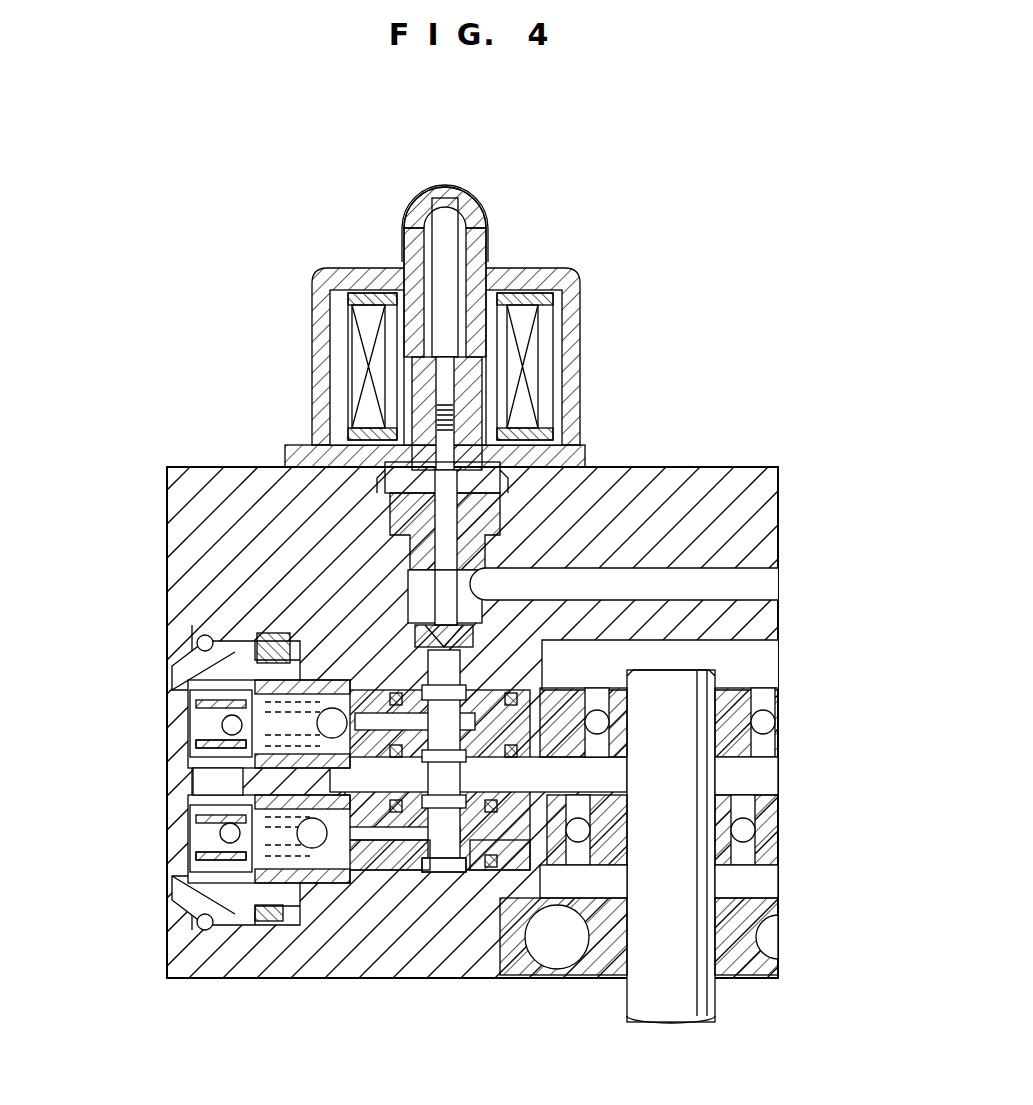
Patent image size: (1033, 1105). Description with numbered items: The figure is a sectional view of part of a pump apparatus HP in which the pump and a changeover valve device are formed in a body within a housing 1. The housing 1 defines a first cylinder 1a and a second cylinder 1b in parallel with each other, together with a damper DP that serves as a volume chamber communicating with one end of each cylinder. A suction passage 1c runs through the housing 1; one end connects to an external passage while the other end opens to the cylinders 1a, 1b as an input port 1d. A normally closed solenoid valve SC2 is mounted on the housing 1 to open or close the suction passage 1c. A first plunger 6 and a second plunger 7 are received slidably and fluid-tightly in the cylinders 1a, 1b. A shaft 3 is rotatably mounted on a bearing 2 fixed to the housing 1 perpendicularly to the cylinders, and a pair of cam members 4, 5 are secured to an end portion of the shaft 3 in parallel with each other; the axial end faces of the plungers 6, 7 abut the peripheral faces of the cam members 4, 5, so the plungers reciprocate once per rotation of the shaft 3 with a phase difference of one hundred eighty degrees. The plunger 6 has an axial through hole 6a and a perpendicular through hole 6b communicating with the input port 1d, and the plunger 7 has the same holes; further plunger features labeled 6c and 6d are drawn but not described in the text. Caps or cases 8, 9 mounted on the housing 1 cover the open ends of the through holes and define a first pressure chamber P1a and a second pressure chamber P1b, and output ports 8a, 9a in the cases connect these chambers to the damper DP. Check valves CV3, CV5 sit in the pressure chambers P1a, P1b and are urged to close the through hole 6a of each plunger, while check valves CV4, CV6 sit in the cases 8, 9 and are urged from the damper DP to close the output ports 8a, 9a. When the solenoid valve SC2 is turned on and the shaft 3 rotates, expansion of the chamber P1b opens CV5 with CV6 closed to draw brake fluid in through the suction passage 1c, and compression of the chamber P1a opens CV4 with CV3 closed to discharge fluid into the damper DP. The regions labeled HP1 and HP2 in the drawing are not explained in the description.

The housing 1 is at (782, 478).
The first cylinder 1a is at (585, 900).
The second cylinder 1b is at (548, 700).
The suction passage 1c is at (765, 583).
The input port 1d is at (400, 660).
The bearing 2 is at (730, 980).
The shaft 3 is at (662, 1002).
The cum member 4 is at (730, 865).
The cum member 5 is at (730, 757).
The first plunger 6 is at (342, 873).
The axial through hole 6a is at (398, 840).
The through hole 6b is at (432, 873).
The sleeve port 6c is at (377, 873).
The sleeve port 6d is at (485, 873).
The second plunger 7 is at (497, 693).
The case 8 is at (317, 873).
The output port 8a is at (240, 825).
The case 9 is at (225, 685).
The output port 9a is at (212, 748).
The check valve CV3 is at (330, 873).
The check valve CV4 is at (207, 842).
The check valve CV5 is at (330, 708).
The check valve CV6 is at (228, 718).
The damper DP is at (215, 780).
The pump apparatus HP is at (221, 440).
The first pump port HP1 is at (162, 842).
The second pump port HP2 is at (162, 718).
The first pressure chamber P1a is at (245, 928).
The second pressure chamber P1b is at (262, 640).
The solenoid valve SC2 is at (578, 312).